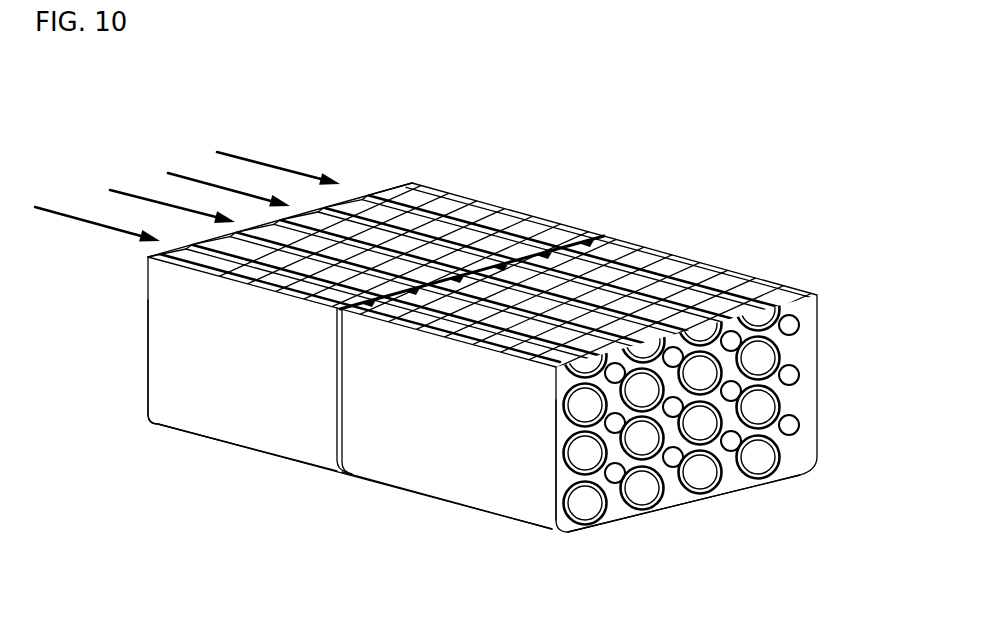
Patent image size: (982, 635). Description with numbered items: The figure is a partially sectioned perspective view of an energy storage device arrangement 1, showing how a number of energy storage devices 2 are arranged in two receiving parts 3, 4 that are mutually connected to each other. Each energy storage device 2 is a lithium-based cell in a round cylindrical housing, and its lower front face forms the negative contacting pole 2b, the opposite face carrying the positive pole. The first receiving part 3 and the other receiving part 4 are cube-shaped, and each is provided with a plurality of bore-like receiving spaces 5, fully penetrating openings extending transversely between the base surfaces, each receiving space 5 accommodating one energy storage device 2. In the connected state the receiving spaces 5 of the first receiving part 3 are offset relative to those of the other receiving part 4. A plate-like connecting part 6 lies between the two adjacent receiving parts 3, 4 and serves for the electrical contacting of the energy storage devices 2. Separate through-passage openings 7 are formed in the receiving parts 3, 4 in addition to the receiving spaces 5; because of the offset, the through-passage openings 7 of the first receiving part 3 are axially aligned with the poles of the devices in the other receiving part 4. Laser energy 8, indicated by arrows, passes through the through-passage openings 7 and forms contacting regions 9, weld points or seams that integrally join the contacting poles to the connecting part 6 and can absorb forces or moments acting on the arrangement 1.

The energy storage device arrangement 1 is at (643, 175).
The energy storage device 2 is at (660, 313).
The contacting pole 2b is at (700, 475).
The first receiving part 3 is at (413, 478).
The another receiving part 4 is at (227, 432).
The receiving space 5 is at (620, 530).
The connecting part 6 is at (337, 457).
The through-passage opening 7 is at (352, 184).
The laser energy 8 is at (148, 197).
The contacting region 9 is at (367, 300).